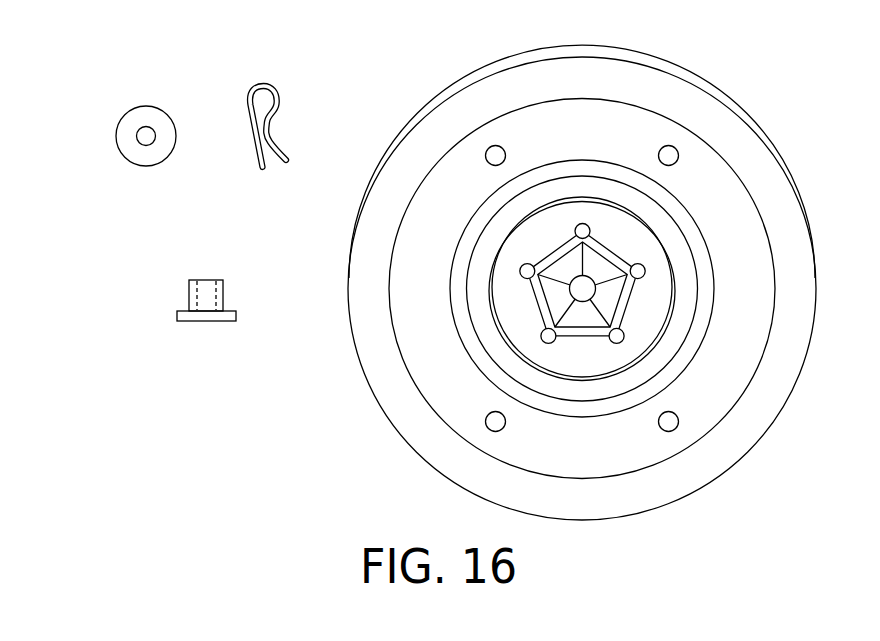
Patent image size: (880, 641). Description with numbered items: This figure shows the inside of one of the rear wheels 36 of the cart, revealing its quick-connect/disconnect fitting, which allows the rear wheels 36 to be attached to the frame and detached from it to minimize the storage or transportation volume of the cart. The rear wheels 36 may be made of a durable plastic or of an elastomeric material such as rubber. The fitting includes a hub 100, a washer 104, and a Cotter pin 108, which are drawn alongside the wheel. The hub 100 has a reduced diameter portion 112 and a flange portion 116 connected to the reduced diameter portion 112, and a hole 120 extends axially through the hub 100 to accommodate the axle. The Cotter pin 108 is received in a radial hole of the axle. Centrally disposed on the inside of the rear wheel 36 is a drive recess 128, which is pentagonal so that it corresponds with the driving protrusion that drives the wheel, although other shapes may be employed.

The rear wheel 36 is at (728, 87).
The hub 100 is at (210, 296).
The washer 104 is at (125, 113).
The Cotter pin 108 is at (260, 83).
The reduced diameter portion 112 is at (189, 291).
The flange portion 116 is at (190, 314).
The hole 120 is at (206, 280).
The drive recess 128 is at (620, 254).